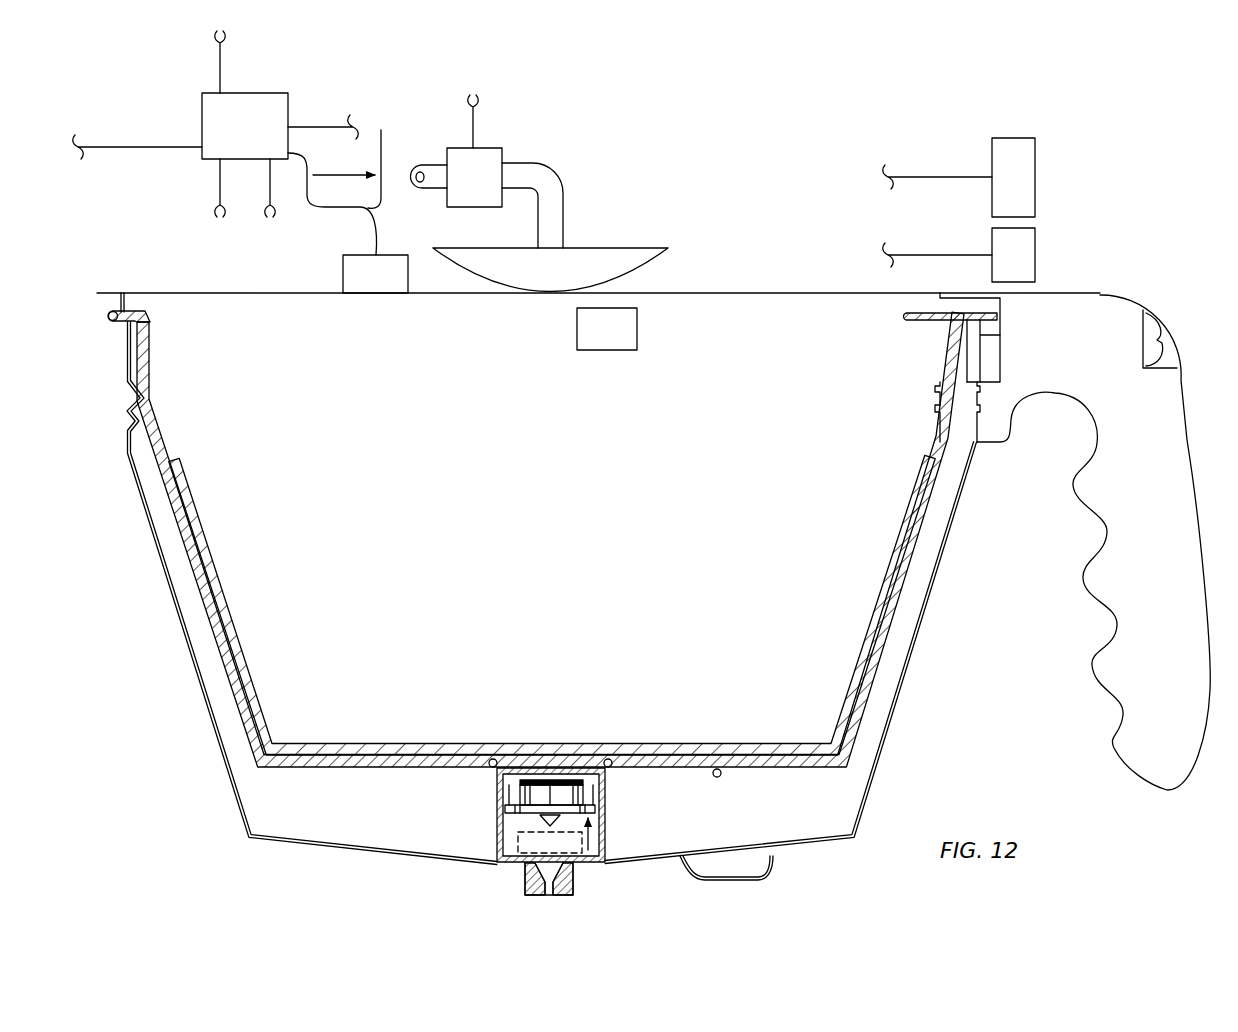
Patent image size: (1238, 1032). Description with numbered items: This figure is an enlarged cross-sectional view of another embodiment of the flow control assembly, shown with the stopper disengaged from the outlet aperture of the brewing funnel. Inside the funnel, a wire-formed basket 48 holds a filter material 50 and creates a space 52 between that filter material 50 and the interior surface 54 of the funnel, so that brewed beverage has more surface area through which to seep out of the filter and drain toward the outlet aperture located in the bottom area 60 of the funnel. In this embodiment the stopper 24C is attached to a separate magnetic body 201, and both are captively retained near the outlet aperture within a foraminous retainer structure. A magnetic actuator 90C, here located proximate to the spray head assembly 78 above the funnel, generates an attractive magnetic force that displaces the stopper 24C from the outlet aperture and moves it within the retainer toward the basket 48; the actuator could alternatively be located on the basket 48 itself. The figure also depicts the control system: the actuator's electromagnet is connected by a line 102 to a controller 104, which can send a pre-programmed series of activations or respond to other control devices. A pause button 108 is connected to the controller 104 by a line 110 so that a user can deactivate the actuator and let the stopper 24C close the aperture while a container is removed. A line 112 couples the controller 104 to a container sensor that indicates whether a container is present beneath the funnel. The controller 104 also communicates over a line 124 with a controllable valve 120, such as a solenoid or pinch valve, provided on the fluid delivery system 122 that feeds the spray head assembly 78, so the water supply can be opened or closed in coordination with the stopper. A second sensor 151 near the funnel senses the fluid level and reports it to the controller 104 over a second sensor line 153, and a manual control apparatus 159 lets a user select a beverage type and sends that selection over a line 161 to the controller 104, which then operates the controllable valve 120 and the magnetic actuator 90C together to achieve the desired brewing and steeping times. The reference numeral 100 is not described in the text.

The stopper 24C is at (513, 792).
The basket 48 is at (887, 601).
The filter material 50 is at (895, 555).
The space 52 is at (937, 533).
The interior surface 54 is at (904, 668).
The bottom area 60 is at (650, 874).
The spray head assembly 78 is at (633, 243).
The magnetic actuator 90C is at (600, 350).
The handle 100 is at (820, 848).
The line 102 is at (140, 147).
The controller 104 is at (202, 125).
The pause button 108 is at (1030, 182).
The line 110 is at (323, 122).
The line 112 is at (217, 183).
The controllable valve 120 is at (488, 160).
The fluid delivery system 122 is at (552, 198).
The line 124 is at (478, 128).
The second sensor 151 is at (343, 272).
The second sensor line 153 is at (346, 181).
The manual control apparatus 159 is at (1030, 258).
The line 161 is at (222, 68).
The magnetic body 201 is at (580, 780).